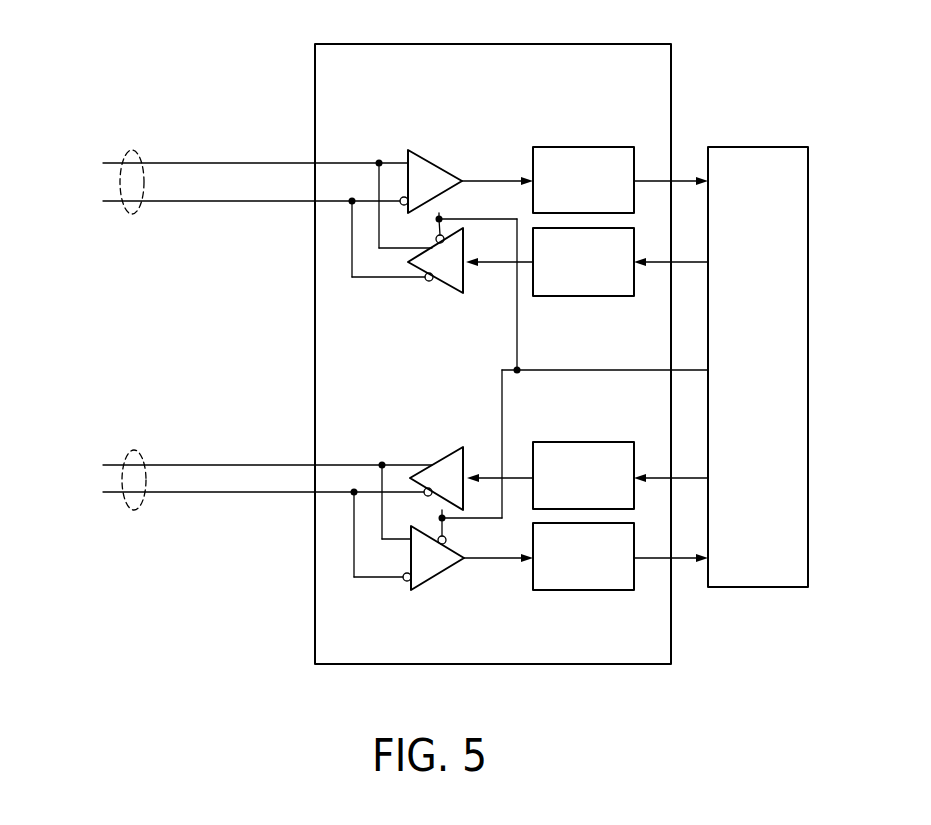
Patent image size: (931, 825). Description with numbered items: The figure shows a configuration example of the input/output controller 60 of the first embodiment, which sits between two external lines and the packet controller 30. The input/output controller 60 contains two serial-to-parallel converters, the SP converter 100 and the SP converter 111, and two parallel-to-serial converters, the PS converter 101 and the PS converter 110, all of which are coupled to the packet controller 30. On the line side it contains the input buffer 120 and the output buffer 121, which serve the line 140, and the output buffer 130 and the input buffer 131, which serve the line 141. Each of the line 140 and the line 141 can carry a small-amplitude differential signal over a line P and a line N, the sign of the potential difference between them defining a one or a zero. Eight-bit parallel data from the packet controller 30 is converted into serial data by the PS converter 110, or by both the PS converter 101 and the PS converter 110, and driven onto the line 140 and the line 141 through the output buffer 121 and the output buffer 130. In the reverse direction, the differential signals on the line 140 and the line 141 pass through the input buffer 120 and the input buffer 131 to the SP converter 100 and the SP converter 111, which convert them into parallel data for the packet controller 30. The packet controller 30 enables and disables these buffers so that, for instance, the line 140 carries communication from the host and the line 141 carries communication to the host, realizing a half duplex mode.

The input/output controller 60 is at (671, 73).
The packet controller 30 is at (758, 588).
The SP converter 100 is at (613, 146).
The PS converter 101 is at (582, 297).
The PS converter 110 is at (587, 441).
The SP converter 111 is at (600, 591).
The input buffer 120 is at (434, 158).
The output buffer 121 is at (450, 295).
The output buffer 130 is at (453, 443).
The input buffer 131 is at (432, 583).
The line 140 is at (120, 170).
The line 141 is at (122, 479).